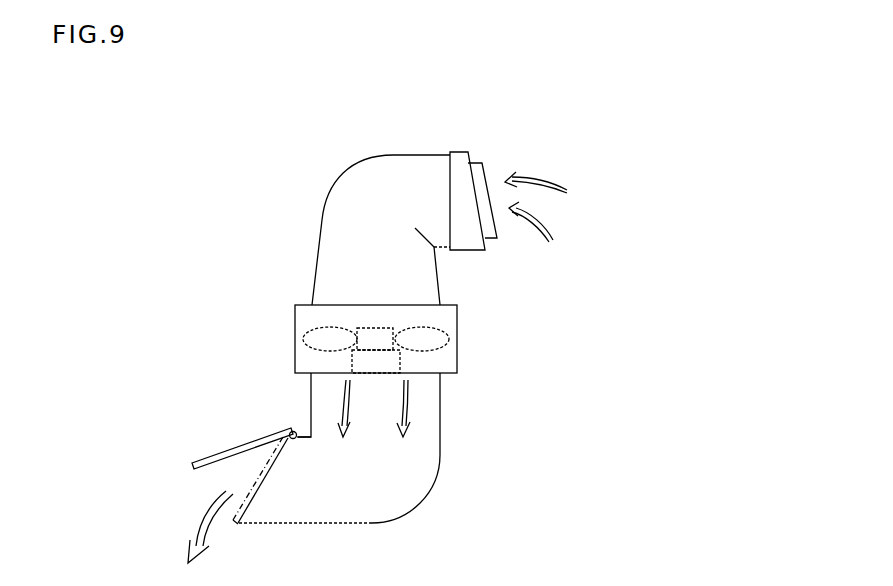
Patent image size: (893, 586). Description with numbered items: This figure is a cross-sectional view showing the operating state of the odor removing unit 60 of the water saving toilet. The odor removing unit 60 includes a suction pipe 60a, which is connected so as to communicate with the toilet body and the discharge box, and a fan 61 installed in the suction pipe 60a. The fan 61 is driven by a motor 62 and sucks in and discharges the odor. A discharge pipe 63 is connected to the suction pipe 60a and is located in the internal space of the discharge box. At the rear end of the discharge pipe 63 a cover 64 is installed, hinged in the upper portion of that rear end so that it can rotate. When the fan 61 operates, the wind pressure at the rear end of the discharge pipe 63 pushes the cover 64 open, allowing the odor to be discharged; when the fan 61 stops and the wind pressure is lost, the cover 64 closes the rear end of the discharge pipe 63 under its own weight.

The odor removing unit 60 is at (205, 283).
The suction pipe 60a is at (330, 228).
The fan 61 is at (303, 340).
The motor 62 is at (377, 368).
The discharge pipe 63 is at (400, 500).
The cover 64 is at (207, 457).